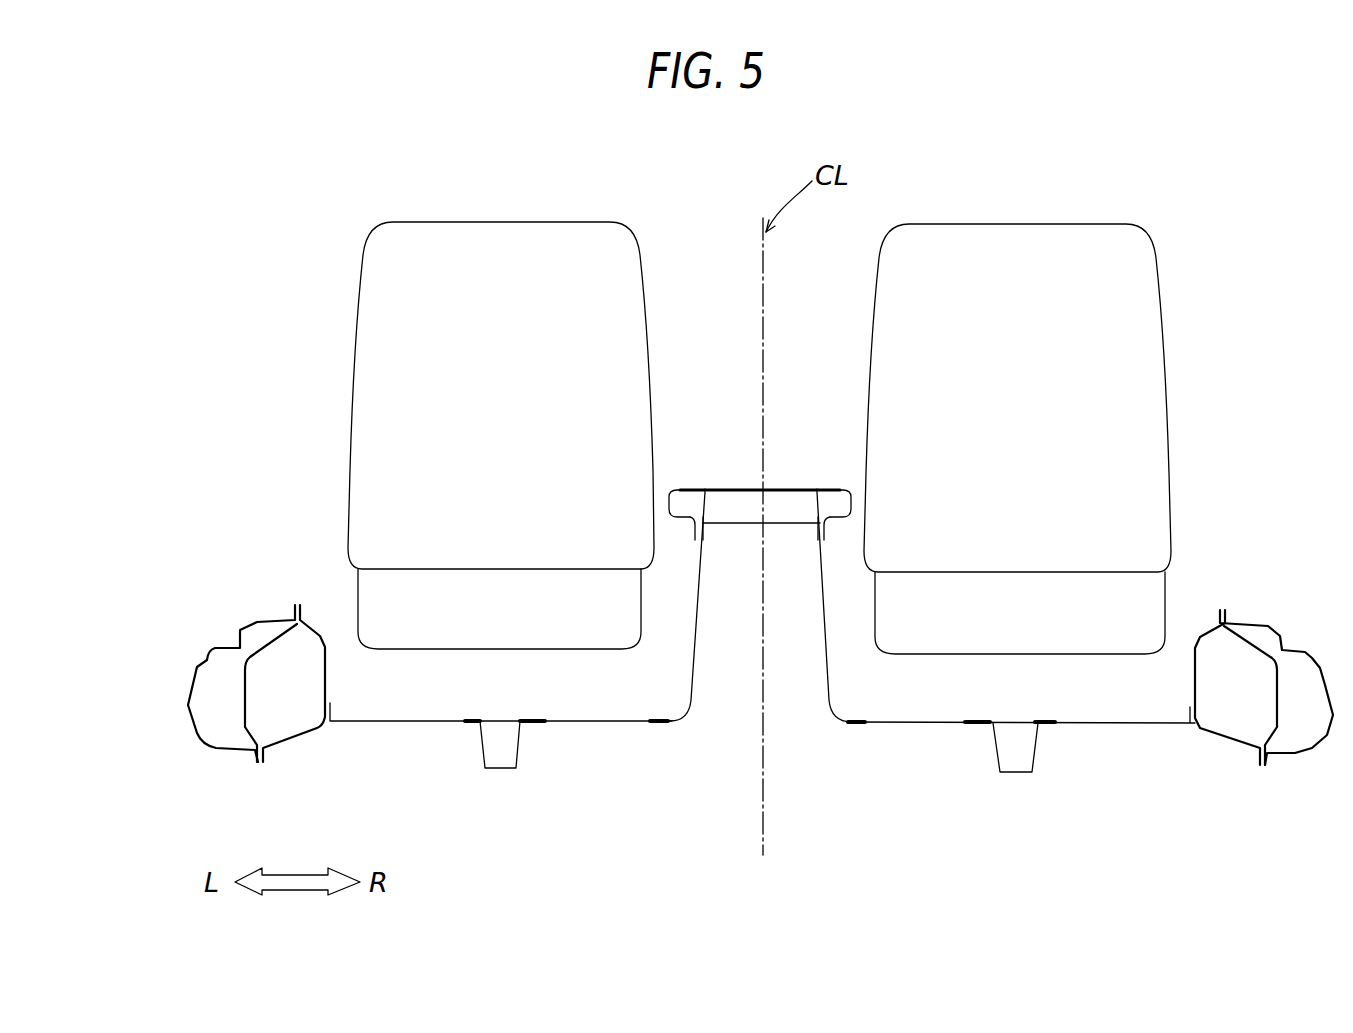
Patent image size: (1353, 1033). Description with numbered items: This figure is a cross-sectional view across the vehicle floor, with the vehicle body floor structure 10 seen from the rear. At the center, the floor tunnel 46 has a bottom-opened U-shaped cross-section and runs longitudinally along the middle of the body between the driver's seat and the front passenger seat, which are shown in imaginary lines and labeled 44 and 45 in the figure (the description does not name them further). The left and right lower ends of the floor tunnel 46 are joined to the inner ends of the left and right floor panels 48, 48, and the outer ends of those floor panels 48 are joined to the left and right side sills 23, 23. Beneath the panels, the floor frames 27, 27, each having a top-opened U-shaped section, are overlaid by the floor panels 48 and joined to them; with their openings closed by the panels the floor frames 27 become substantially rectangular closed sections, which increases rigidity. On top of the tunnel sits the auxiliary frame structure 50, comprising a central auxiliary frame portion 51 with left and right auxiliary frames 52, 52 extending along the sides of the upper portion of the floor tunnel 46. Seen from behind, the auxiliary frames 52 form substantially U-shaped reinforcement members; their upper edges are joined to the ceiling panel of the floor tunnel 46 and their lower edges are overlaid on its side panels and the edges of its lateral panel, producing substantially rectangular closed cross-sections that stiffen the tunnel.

The seat assembly 10 is at (240, 512).
The side sill 23 is at (212, 642).
The floor frame 27 is at (503, 770).
The left seat 44 is at (487, 222).
The right seat 45 is at (1055, 224).
The floor tunnel 46 is at (828, 620).
The floor panel 48 is at (628, 723).
The cover 50 is at (738, 440).
The central auxiliary frame portion 51 is at (744, 512).
The auxiliary frame 52 is at (689, 489).